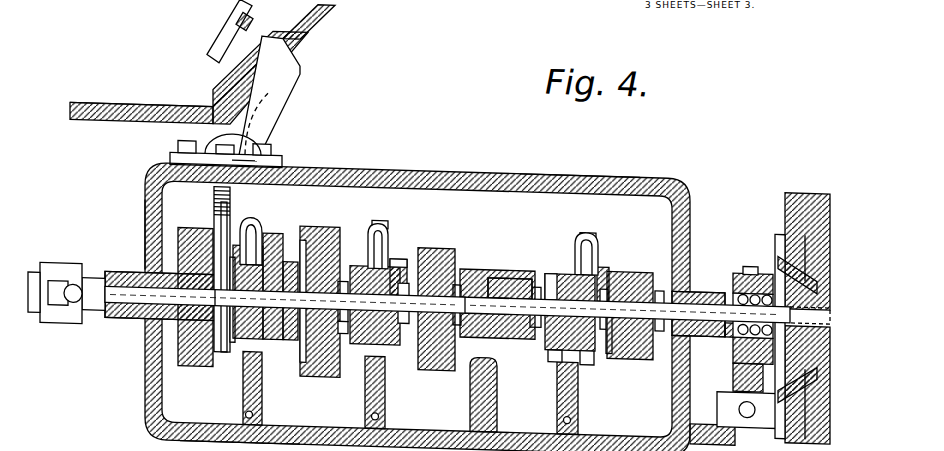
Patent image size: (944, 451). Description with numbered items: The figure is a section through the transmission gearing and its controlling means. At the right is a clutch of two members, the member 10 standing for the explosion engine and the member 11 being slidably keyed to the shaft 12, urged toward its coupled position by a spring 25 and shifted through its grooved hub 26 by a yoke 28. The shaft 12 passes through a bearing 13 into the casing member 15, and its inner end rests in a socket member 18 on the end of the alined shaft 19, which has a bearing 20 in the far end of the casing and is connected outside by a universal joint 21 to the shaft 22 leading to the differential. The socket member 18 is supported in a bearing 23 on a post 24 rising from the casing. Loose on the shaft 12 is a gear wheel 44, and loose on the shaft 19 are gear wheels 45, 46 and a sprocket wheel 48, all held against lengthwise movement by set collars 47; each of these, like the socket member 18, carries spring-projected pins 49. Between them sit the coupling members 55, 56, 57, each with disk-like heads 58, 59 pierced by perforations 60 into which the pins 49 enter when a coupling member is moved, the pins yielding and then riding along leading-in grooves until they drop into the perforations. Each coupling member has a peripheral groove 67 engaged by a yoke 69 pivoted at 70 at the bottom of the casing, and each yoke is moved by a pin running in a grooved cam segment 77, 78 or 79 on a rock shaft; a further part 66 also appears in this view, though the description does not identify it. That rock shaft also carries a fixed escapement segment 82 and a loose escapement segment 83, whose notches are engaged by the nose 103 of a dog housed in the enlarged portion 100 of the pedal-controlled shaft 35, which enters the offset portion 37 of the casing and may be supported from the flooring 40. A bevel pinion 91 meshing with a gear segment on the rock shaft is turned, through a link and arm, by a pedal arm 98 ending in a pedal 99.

The clutch member 10 is at (810, 174).
The clutch member 11 is at (778, 225).
The shaft 12 is at (660, 300).
The bearing 13 is at (688, 276).
The casing member 15 is at (537, 170).
The socket member 18 is at (496, 268).
The shaft 19 is at (112, 320).
The bearing 20 is at (130, 320).
The universal joint 21 is at (72, 326).
The shaft 22 is at (50, 268).
The bearing 23 is at (470, 260).
The post 24 is at (470, 410).
The spring 25 is at (727, 320).
The grooved hub 26 is at (752, 256).
The yoke 28 is at (733, 360).
The shaft 35 is at (168, 157).
The offset portion 37 is at (152, 203).
The flooring 40 is at (122, 108).
The gear wheel 44 is at (646, 345).
The gear wheel 45 is at (445, 362).
The gear wheel 46 is at (326, 373).
The set collar 47 is at (320, 356).
The sprocket wheel 48 is at (155, 380).
The pin 49 is at (232, 340).
The coupling member 55 is at (550, 262).
The coupling member 56 is at (404, 250).
The coupling member 57 is at (232, 335).
The head 58 is at (258, 340).
The head 59 is at (252, 226).
The perforation 60 is at (274, 232).
The gear 66 is at (186, 365).
The peripheral groove 67 is at (586, 220).
The yoke 69 is at (263, 398).
The pivot 70 is at (379, 411).
The cam segment 77 is at (608, 168).
The cam segment 78 is at (370, 226).
The cam segment 79 is at (256, 242).
The escapement segment 82 is at (222, 205).
The escapement segment 83 is at (214, 213).
The bevel pinion 91 is at (165, 288).
The pedal arm 98 is at (290, 70).
The pedal 99 is at (212, 44).
The enlarged portion 100 is at (270, 108).
The nose 103 is at (214, 192).